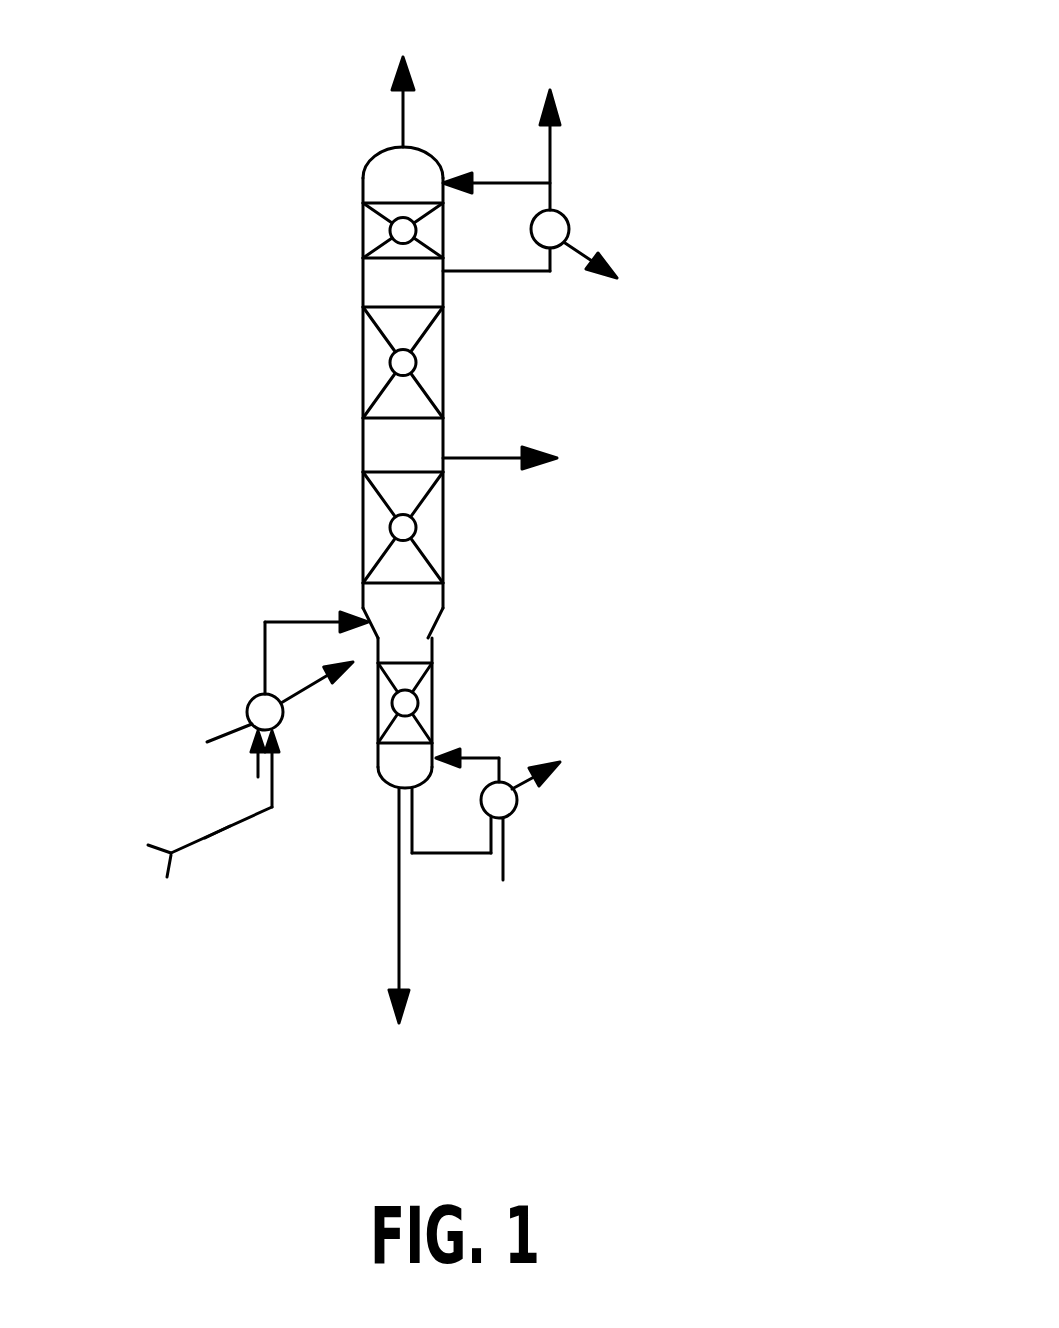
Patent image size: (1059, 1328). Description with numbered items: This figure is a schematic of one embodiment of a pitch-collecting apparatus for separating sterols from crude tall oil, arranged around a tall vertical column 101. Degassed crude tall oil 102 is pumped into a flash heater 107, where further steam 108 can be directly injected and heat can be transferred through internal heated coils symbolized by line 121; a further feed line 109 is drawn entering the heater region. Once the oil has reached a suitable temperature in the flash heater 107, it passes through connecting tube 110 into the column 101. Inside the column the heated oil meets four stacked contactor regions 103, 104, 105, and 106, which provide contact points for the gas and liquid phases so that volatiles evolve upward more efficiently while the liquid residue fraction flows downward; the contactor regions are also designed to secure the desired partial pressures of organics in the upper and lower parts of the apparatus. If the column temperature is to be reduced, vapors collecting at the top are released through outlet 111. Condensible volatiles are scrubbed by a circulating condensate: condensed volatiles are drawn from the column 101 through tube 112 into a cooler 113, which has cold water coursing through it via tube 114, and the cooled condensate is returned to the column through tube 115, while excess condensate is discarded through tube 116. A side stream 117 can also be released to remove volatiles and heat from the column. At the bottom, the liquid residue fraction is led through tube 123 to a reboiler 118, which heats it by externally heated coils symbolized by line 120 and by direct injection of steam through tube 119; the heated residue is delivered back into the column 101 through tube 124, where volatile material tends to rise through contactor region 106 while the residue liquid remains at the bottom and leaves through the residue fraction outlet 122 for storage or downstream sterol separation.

The column 101 is at (703, 25).
The crude tall oil 102 is at (182, 812).
The contactor region 103 is at (345, 230).
The contactor region 104 is at (345, 379).
The contactor region 105 is at (349, 533).
The contactor region 106 is at (448, 698).
The flash heater 107 is at (215, 703).
The steam 108 is at (228, 771).
The feed line 109 is at (217, 833).
The connecting tube 110 is at (268, 605).
The outlet 111 is at (401, 77).
The tube 112 is at (490, 277).
The cooler 113 is at (600, 226).
The tube 114 is at (522, 200).
The tube 115 is at (492, 182).
The tube 116 is at (552, 165).
The side stream 117 is at (539, 459).
The reboiler 118 is at (550, 812).
The tube 119 is at (505, 865).
The line 120 is at (515, 781).
The line 121 is at (223, 740).
The residue fraction outlet 122 is at (394, 924).
The tube 123 is at (435, 855).
The tube 124 is at (477, 735).